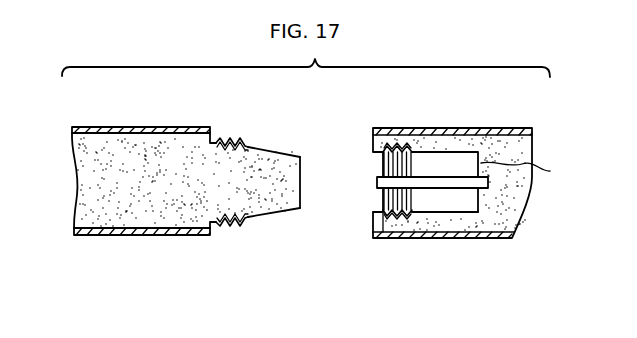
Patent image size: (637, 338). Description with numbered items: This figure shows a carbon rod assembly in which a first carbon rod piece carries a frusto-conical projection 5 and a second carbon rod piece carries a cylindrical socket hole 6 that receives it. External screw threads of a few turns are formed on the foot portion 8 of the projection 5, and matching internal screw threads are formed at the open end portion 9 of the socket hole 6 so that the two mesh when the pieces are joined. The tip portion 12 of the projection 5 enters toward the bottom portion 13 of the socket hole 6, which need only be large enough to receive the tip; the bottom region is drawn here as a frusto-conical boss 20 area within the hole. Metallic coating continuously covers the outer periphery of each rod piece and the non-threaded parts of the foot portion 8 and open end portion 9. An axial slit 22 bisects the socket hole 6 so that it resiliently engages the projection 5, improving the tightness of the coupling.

The projection 5 is at (277, 160).
The socket hole 6 is at (428, 163).
The foot portion 8 is at (214, 140).
The open end portion 9 is at (380, 209).
The tip portion 12 is at (302, 203).
The bottom portion 13 is at (550, 171).
The frusto-conical boss 20 is at (460, 208).
The slit 22 is at (454, 183).